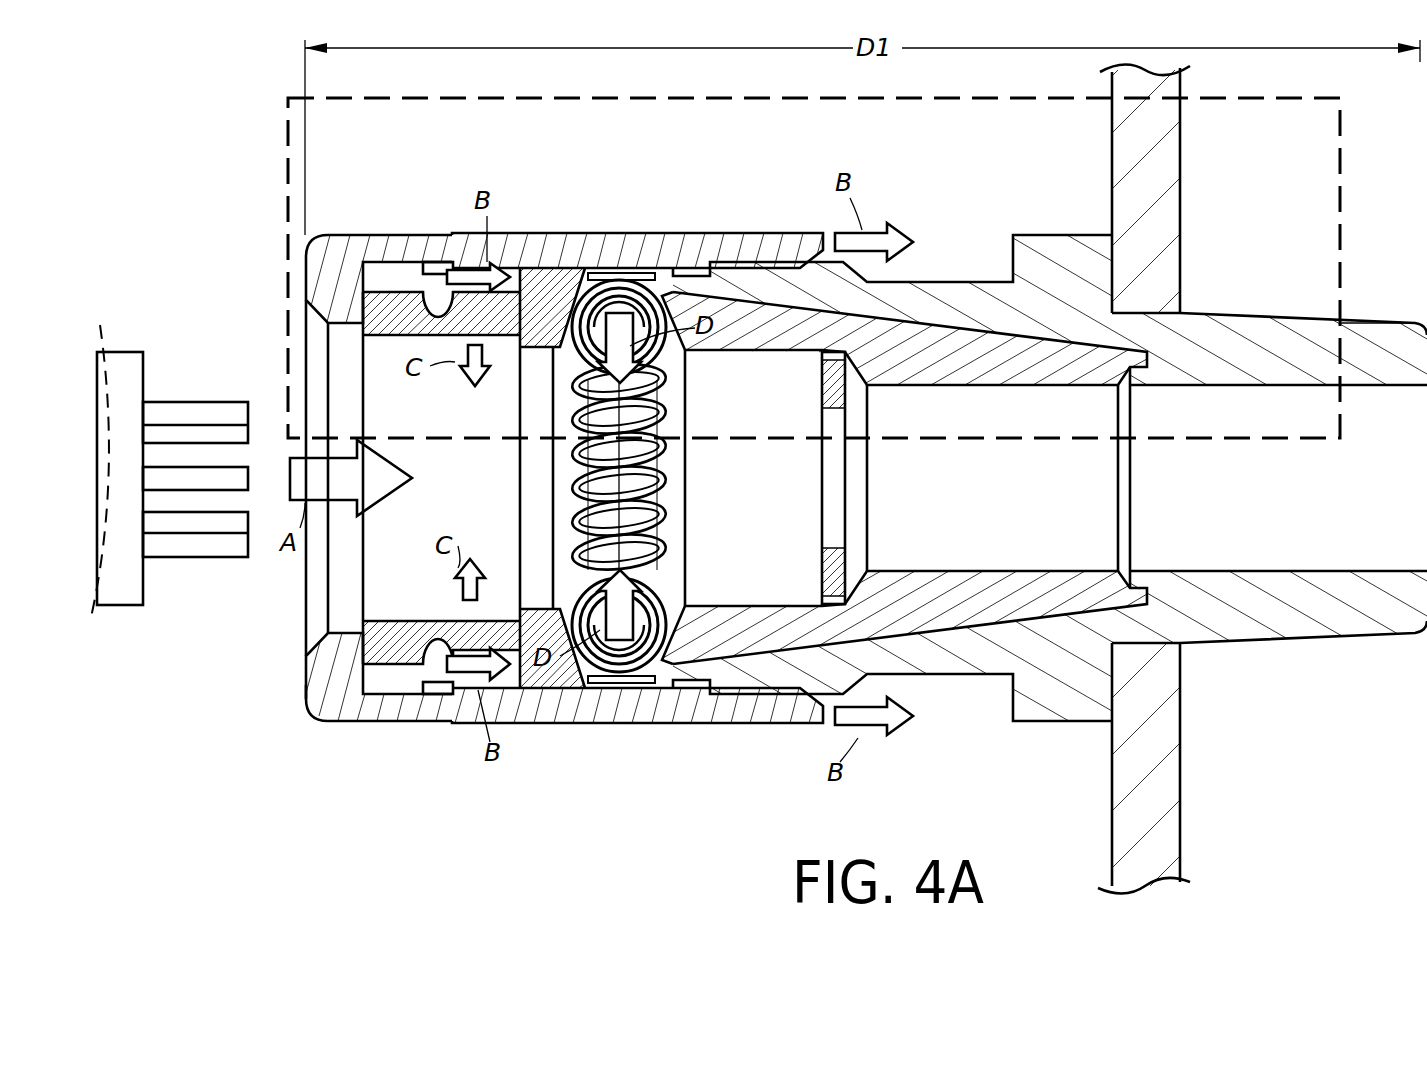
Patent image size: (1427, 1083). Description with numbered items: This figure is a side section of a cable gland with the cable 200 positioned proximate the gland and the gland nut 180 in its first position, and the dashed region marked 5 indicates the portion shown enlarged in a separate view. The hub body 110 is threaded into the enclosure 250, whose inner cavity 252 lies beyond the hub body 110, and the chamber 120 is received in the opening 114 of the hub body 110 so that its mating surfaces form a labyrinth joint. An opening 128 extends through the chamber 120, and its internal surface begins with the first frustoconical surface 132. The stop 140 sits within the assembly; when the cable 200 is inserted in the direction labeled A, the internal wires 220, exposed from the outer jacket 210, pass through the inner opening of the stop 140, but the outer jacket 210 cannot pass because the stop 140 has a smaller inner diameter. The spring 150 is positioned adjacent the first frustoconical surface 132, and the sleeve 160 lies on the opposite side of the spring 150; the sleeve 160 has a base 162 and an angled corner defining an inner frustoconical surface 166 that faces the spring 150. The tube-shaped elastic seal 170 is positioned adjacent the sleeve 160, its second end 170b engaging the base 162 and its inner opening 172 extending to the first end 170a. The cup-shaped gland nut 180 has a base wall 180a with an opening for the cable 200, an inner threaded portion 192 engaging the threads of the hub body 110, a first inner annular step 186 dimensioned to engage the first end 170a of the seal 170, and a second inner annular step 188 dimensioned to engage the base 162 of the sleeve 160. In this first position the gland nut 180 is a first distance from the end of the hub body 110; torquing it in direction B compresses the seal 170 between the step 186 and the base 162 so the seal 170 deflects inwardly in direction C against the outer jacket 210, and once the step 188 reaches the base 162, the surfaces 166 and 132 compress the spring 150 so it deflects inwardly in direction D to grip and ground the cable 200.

The enlarged side view region 5 is at (288, 265).
The hub body 110 is at (1262, 478).
The opening 114 is at (1305, 493).
The chamber 120 is at (1044, 510).
The opening 128 is at (1017, 496).
The first frustoconical surface 132 is at (680, 620).
The stop 140 is at (796, 372).
The spring 150 is at (684, 476).
The sleeve 160 is at (556, 258).
The base 162 is at (512, 607).
The inner frustoconical surface 166 is at (562, 347).
The seal 170 is at (486, 425).
The first end 170a is at (363, 650).
The second end 170b is at (470, 636).
The inner opening 172 is at (505, 501).
The gland nut 180 is at (326, 460).
The base wall 180a is at (308, 693).
The first inner annular step 186 is at (365, 313).
The second inner annular step 188 is at (430, 694).
The inner threaded portion 192 is at (683, 265).
The cable 200 is at (169, 449).
The outer jacket 210 is at (117, 606).
The internal wires 220 is at (205, 572).
The enclosure 250 is at (1210, 176).
The inner cavity 252 is at (1422, 293).